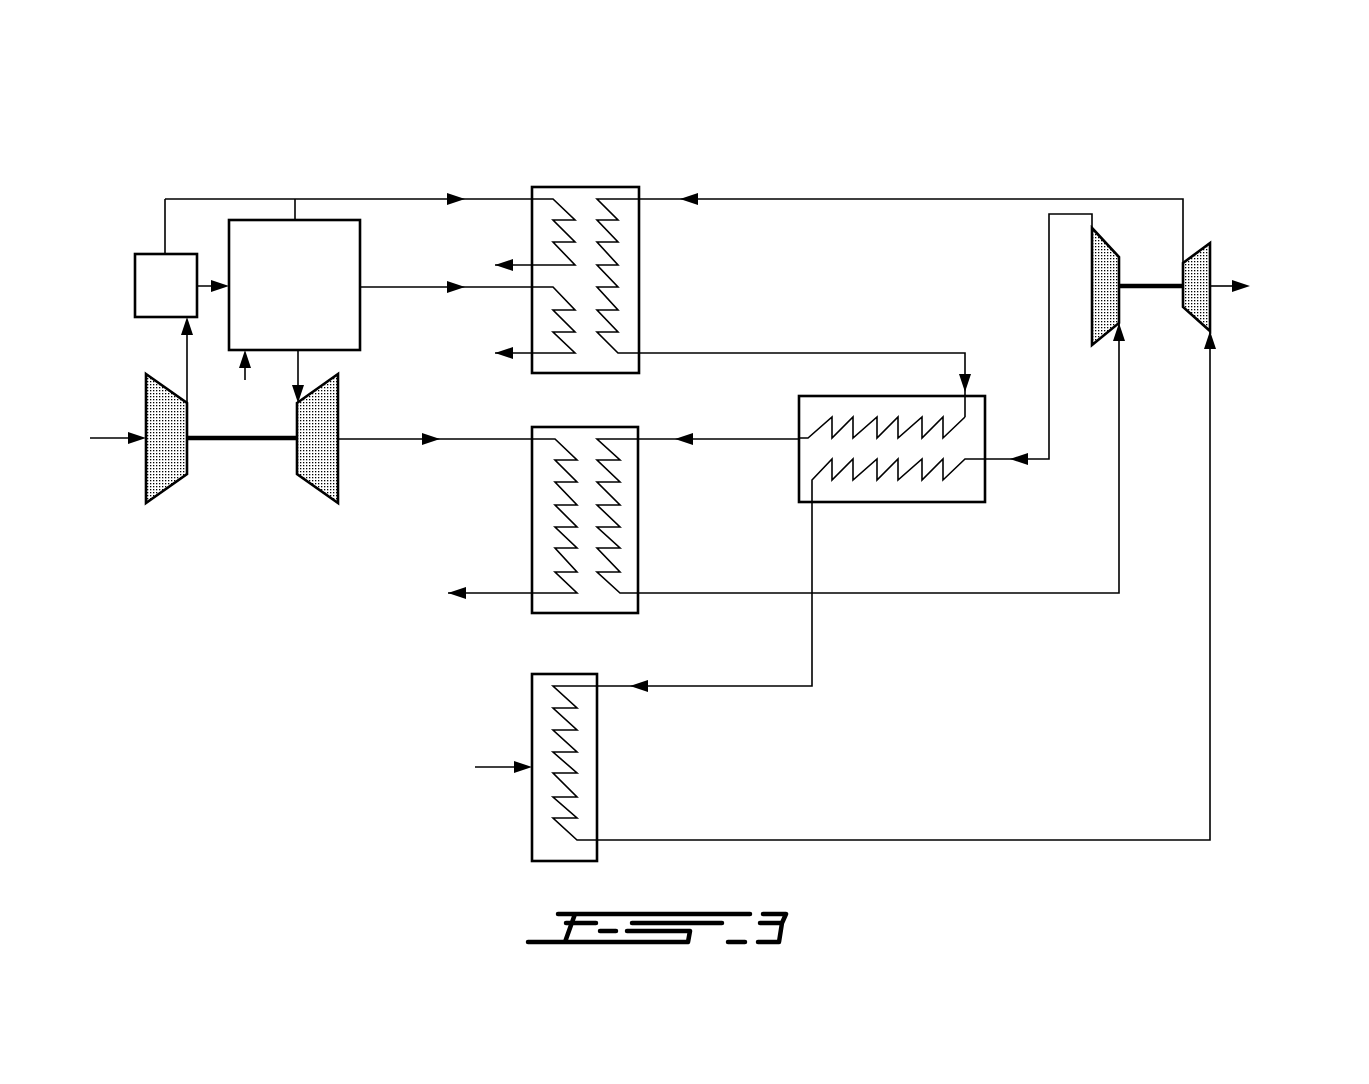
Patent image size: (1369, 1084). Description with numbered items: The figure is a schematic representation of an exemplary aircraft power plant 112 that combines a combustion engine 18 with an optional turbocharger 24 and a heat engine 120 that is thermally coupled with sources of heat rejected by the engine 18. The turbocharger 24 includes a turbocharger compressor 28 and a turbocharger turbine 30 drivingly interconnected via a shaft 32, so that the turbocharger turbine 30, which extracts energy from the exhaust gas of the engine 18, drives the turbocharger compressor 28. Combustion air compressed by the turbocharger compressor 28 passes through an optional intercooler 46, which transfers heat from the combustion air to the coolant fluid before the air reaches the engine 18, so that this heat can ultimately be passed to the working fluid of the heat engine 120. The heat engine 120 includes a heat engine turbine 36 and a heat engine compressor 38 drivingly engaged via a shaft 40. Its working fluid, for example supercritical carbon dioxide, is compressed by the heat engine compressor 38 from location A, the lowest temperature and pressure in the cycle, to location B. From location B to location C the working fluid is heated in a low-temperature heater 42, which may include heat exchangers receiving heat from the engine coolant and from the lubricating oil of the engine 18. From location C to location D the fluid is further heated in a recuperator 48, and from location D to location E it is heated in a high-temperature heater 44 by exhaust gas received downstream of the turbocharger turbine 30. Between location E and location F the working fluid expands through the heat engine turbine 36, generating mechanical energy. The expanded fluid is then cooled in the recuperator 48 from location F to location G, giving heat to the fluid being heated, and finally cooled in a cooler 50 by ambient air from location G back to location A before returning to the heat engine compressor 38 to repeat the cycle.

The aircraft power plant 112 is at (138, 155).
The heat engine 120 is at (866, 155).
The combustion engine 18 is at (270, 245).
The intercooler 46 is at (147, 282).
The turbocharger 24 is at (248, 553).
The turbocharger compressor 28 is at (177, 480).
The turbocharger turbine 30 is at (312, 478).
The shaft 32 is at (240, 445).
The low-temperature heater 42 is at (580, 205).
The high-temperature heater 44 is at (575, 437).
The recuperator 48 is at (814, 406).
The cooler 50 is at (540, 697).
The heat engine turbine 36 is at (1107, 250).
The heat engine compressor 38 is at (1198, 265).
The shaft 40 is at (1148, 290).
The location A is at (1210, 388).
The location B is at (973, 198).
The location C is at (752, 353).
The location D is at (720, 438).
The location E is at (738, 593).
The location F is at (1049, 257).
The location G is at (718, 686).